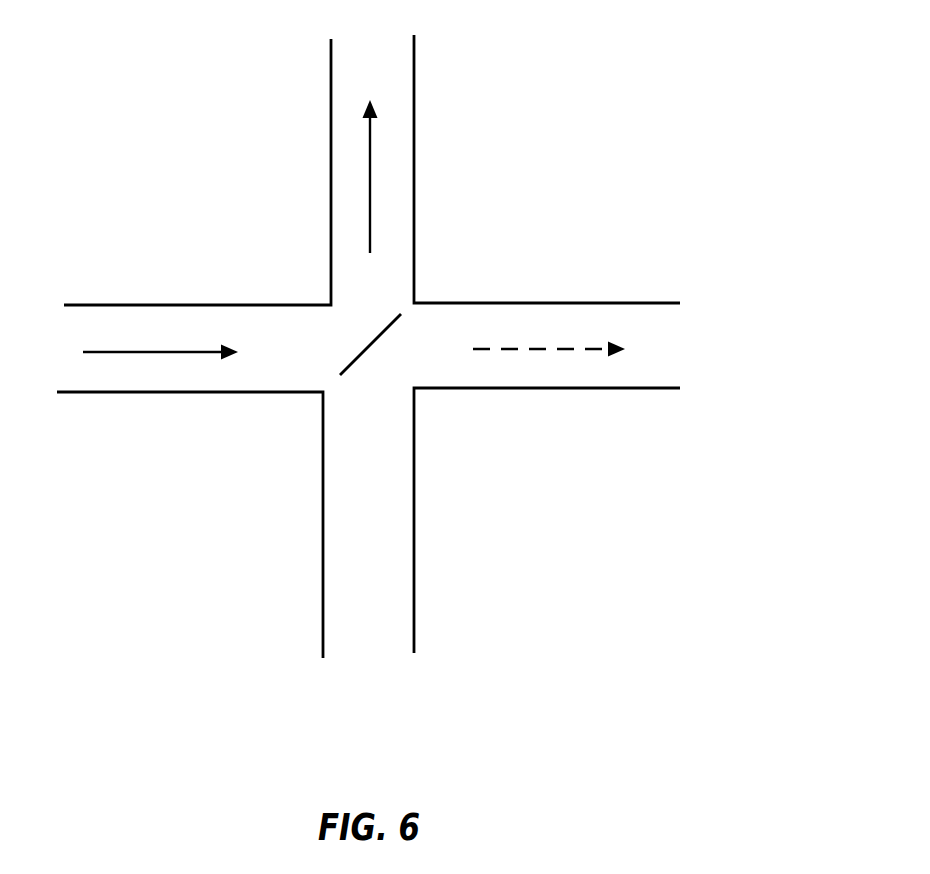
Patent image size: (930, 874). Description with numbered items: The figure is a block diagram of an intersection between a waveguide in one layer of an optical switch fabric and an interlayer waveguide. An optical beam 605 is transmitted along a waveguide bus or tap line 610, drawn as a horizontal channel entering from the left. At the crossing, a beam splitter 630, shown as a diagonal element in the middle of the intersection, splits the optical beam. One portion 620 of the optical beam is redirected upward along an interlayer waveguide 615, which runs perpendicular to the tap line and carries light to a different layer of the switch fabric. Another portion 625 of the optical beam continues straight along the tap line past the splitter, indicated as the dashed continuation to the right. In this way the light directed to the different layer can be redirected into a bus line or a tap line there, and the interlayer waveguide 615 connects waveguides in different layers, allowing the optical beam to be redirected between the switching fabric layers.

The optical beam 605 is at (163, 352).
The waveguide bus or tap line 610 is at (145, 305).
The interlayer waveguide 615 is at (414, 93).
The portion of the optical beam 620 is at (372, 217).
The another portion of the optical beam 625 is at (547, 349).
The beam splitter 630 is at (372, 345).